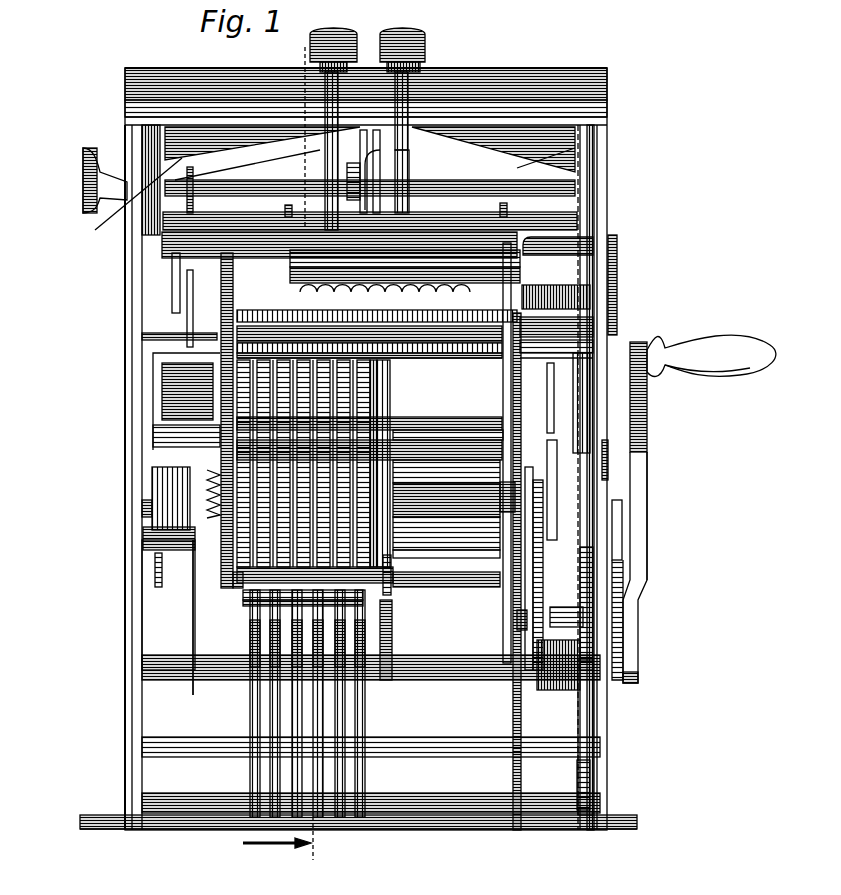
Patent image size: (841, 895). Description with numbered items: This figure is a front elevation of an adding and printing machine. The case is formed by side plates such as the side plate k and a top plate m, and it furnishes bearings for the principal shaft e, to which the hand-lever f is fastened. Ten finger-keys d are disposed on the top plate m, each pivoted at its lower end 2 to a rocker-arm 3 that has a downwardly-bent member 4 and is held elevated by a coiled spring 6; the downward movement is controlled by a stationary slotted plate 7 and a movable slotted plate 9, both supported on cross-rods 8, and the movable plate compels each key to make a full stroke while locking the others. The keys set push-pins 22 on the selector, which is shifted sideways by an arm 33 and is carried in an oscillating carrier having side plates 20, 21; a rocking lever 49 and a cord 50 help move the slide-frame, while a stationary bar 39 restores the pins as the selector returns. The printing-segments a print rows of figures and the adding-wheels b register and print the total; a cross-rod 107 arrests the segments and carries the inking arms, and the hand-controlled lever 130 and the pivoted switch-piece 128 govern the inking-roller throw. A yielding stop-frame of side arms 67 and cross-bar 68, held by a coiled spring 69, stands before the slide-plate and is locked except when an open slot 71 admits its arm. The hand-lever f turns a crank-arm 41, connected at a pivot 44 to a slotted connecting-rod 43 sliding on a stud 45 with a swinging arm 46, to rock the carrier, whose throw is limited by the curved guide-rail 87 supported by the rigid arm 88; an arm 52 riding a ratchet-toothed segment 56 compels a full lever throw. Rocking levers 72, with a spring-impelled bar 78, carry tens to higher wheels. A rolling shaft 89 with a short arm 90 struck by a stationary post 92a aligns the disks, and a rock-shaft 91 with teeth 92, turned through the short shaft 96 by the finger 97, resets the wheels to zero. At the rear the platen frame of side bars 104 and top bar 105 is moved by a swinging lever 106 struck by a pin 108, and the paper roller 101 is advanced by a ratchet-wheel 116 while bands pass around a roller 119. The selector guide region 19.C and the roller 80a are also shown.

The printing-segment a is at (350, 36).
The stationary slotted plate 7 is at (418, 165).
The top plate m is at (481, 68).
The rocker-arm 3 is at (370, 149).
The coiled spring 6 is at (283, 166).
The downwardly-bent member 4 is at (322, 181).
The movable slotted plate 9 is at (351, 181).
The lower end of finger-key 2 is at (405, 150).
The cross-rod 8 is at (527, 224).
The hand-controlled lever 130 is at (193, 203).
The pivoted switch-piece 128 is at (118, 195).
The side arm of rocking stop-frame 67 is at (170, 268).
The cross-bar of stop-frame 68 is at (266, 240).
The type bar 19.C is at (262, 336).
The push-pin 22 is at (430, 277).
The cord 50 is at (522, 244).
The arm 33 is at (497, 293).
The coiled spring 69 is at (583, 283).
The lever or finger 97 is at (618, 280).
The short shaft 96 is at (586, 323).
The side plate k is at (131, 323).
The cross-rod / rock-shaft 107 is at (228, 328).
The top bar of platen frame 105 is at (164, 373).
The short arm 90 is at (165, 386).
The side bar of platen frame 104 is at (158, 419).
The teeth or pins of rock-shaft 92 is at (396, 390).
The rolling shaft 89 is at (428, 362).
The rock-shaft 91 is at (470, 417).
The rocking lever 49 is at (582, 405).
The stationary bar 39 is at (592, 342).
The open slot 71 is at (514, 448).
The roller 80a is at (165, 483).
The ratchet-wheel 116 is at (165, 506).
The stationary post 92a is at (151, 547).
The side plate of oscillating carrier 21 is at (224, 558).
The adding-wheel b is at (247, 578).
The rigid arm 88 is at (387, 483).
The paper-feeding roller 101 is at (446, 512).
The stud 45 is at (508, 483).
The roller 119 is at (446, 561).
The side plate of oscillating carrier 20 is at (505, 556).
The swinging arm 46 is at (544, 562).
The slotted connecting-rod 43 is at (527, 583).
The pin 108 is at (554, 616).
The pivot 44 is at (523, 617).
The rocking lever 72 is at (363, 614).
The curved guide-rail 87 is at (388, 630).
The crank-arm 41 is at (539, 680).
The spring-impelled bar 78 is at (362, 735).
The principal shaft e is at (161, 672).
The arm 52 is at (576, 775).
The hand-lever f is at (648, 462).
The swinging lever 106 is at (586, 515).
The ratchet-toothed segment 56 is at (586, 594).
The finger-key d is at (582, 453).